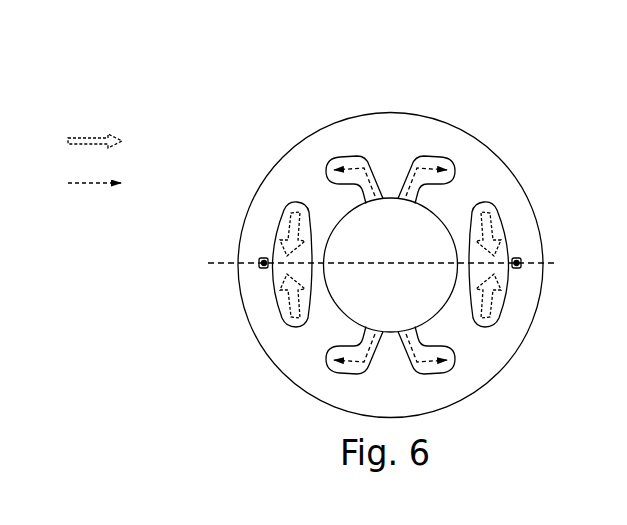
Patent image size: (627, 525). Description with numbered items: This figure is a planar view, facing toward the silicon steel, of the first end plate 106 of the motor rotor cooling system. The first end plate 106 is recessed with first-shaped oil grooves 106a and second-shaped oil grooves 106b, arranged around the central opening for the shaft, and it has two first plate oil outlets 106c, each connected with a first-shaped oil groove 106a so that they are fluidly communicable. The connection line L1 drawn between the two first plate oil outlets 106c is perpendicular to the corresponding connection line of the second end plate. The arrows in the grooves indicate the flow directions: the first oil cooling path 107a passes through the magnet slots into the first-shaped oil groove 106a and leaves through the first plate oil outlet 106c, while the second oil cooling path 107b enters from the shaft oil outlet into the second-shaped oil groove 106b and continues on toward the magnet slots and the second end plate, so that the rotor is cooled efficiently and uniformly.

The first end plate 106 is at (278, 137).
The first-shaped oil groove 106a is at (272, 302).
The second-shaped oil groove 106b is at (415, 148).
The first plate oil outlet 106c is at (262, 270).
The first oil cooling path 107a is at (122, 140).
The second oil cooling path 107b is at (122, 182).
The connection line L1 is at (364, 264).